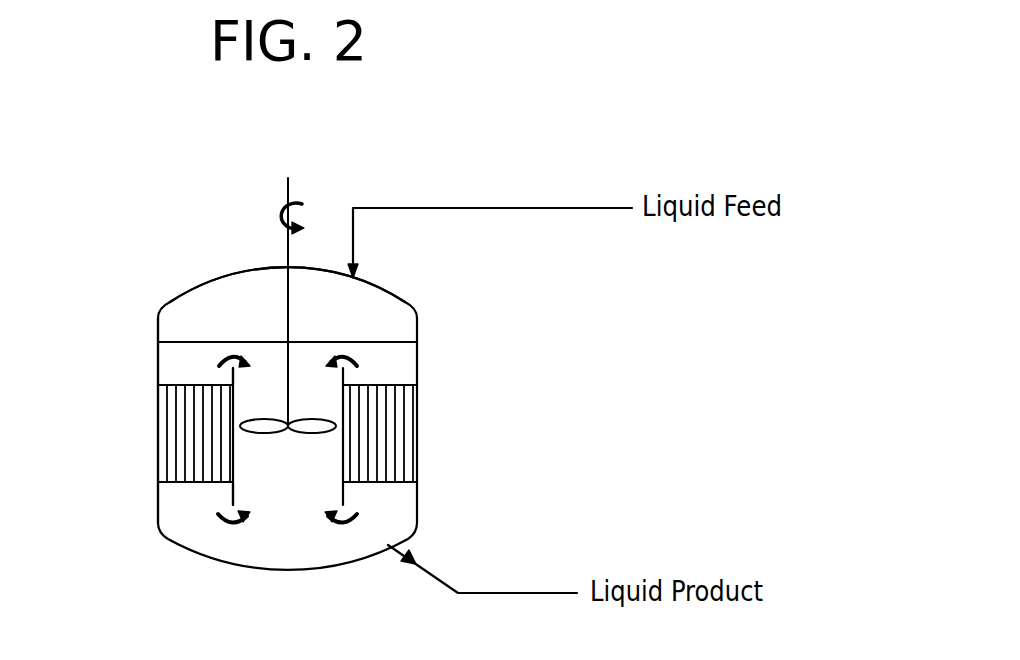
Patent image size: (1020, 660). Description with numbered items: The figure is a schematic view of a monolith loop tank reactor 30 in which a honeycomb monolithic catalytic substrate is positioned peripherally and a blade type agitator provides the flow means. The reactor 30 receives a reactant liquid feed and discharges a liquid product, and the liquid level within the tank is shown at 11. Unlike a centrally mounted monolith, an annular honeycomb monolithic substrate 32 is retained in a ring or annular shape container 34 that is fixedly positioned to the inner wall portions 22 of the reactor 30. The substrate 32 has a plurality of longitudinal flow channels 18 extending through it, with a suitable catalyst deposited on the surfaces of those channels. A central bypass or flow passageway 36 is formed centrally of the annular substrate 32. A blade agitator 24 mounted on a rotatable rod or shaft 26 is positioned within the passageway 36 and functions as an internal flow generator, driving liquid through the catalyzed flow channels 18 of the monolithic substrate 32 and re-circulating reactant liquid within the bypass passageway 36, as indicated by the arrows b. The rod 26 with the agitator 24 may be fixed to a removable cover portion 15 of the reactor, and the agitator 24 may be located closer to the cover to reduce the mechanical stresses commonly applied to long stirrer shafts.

The monolith loop reactor 30 is at (150, 287).
The removable cover portion 15 is at (250, 268).
The inner wall portions 22 is at (168, 372).
The longitudinal flow channels 18 is at (395, 421).
The annular honeycomb monolithic substrate 32 is at (375, 384).
The central bypass passageway 36 is at (272, 408).
The liquid level 11 is at (229, 348).
The annular shape container 34 is at (234, 495).
The blade agitator 24 is at (259, 430).
The rotatable rod or shaft 26 is at (289, 186).
The arrows b is at (229, 348).